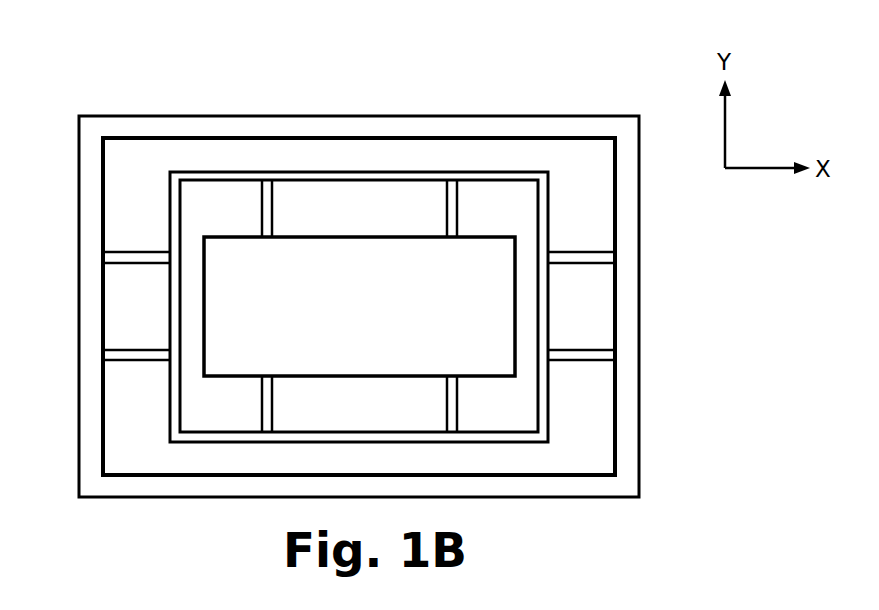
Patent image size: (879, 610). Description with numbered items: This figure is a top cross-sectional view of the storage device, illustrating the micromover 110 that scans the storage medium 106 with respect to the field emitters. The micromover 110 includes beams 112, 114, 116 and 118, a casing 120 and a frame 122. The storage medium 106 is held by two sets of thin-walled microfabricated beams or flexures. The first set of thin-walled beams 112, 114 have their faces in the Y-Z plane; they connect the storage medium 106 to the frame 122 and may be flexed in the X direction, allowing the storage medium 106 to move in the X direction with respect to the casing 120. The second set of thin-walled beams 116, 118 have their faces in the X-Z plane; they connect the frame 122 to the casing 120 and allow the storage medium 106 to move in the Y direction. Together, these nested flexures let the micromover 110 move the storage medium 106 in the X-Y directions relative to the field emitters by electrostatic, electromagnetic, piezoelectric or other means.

The storage medium 106 is at (359, 306).
The micromover 110 is at (160, 81).
The beam 112 is at (264, 211).
The beam 114 is at (455, 215).
The beam 116 is at (578, 352).
The beam 118 is at (578, 253).
The casing 120 is at (628, 444).
The frame 122 is at (545, 208).